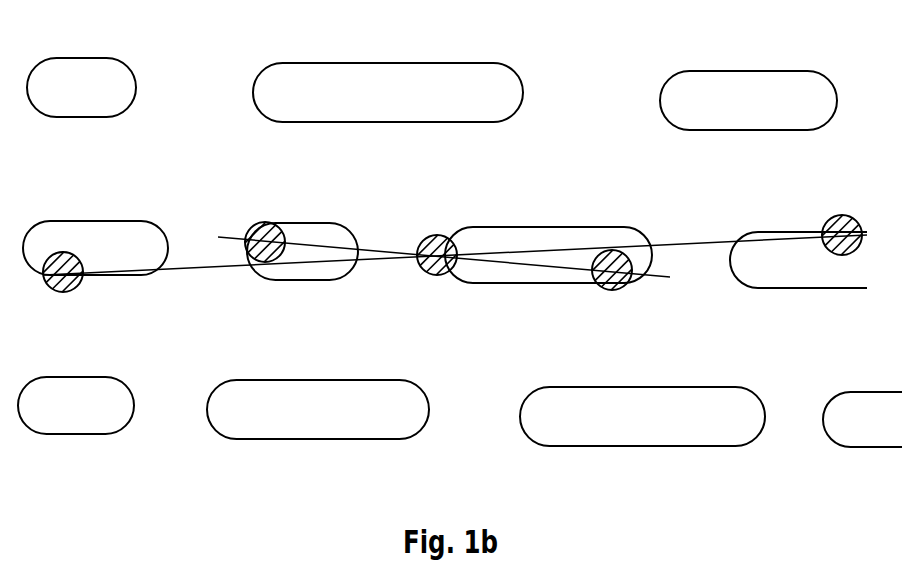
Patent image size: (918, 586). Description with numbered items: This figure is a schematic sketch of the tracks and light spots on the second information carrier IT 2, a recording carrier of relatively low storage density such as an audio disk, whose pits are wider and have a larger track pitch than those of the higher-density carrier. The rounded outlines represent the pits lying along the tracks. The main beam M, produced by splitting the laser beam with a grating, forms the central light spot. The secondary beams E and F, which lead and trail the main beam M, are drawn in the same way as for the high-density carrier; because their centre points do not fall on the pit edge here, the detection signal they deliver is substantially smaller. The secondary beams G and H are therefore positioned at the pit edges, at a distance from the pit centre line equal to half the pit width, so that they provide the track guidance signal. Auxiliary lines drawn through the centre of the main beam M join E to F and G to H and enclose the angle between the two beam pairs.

The secondary beam E is at (279, 213).
The secondary beam G is at (74, 289).
The main beam M is at (448, 229).
The secondary beam F is at (634, 288).
The secondary beam H is at (853, 217).
The second information carrier IT 2 is at (480, 24).